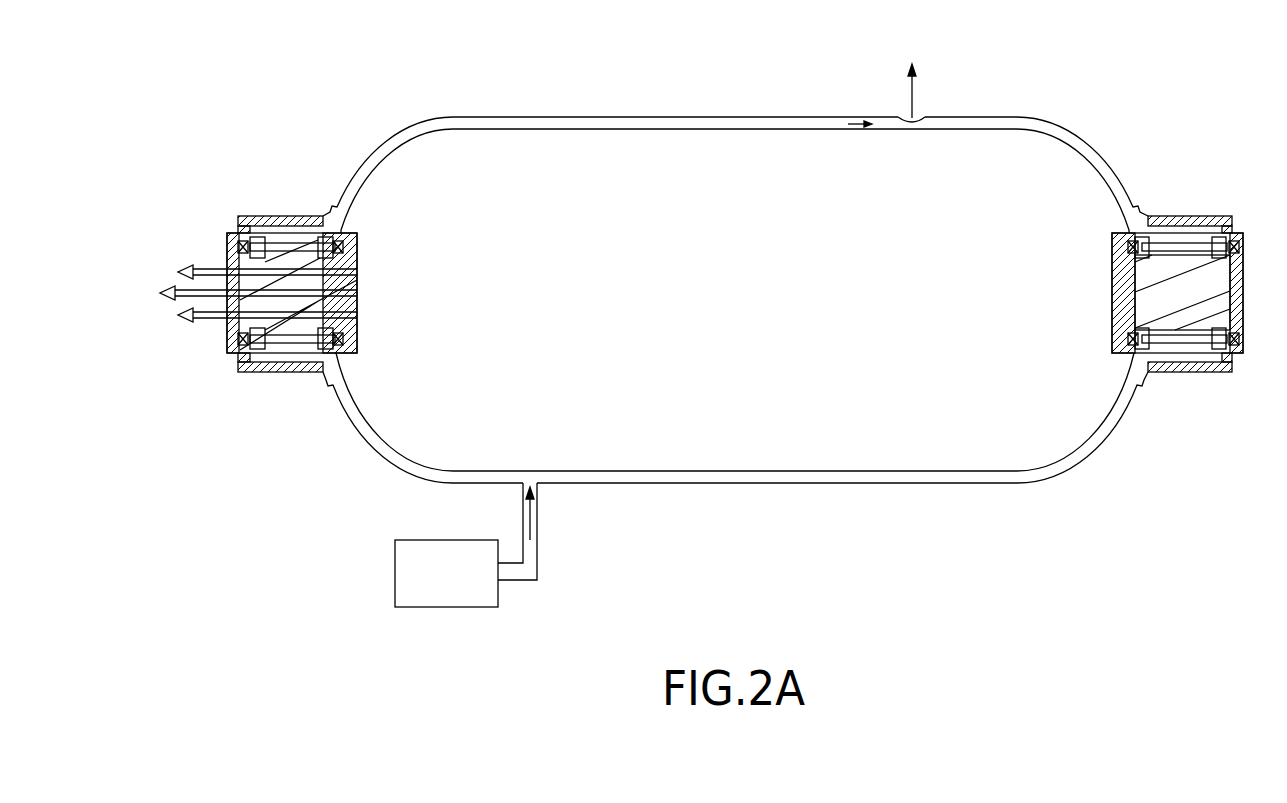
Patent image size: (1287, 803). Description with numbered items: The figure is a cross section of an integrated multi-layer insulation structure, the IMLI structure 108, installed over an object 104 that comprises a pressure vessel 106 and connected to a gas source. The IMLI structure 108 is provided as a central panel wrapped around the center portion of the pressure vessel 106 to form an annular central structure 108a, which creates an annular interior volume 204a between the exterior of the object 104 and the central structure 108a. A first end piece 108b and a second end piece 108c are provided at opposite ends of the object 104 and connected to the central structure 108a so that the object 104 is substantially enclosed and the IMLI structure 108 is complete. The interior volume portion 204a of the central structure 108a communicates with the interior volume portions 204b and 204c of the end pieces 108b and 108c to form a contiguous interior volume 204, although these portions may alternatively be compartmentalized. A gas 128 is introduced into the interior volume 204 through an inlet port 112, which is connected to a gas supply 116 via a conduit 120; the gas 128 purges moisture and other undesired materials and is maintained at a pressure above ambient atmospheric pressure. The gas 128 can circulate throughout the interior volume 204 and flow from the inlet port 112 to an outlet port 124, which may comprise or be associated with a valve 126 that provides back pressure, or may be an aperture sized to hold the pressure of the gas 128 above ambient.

The object 104 is at (1070, 208).
The pressure vessel 106 is at (711, 261).
The IMLI structure 108 is at (988, 118).
The central structure 108a is at (810, 117).
The first end piece 108b is at (410, 118).
The second end piece 108c is at (1100, 155).
The inlet port 112 is at (538, 487).
The gas supply 116 is at (395, 598).
The conduit 120 is at (538, 557).
The outlet port 124 is at (921, 118).
The valve 126 is at (911, 119).
The gas 128 is at (912, 92).
The interior volume 204 is at (556, 122).
The interior volume portion of central structure 204a is at (676, 121).
The interior volume portion of first end piece 204b is at (356, 178).
The interior volume portion of second end piece 204c is at (1058, 136).